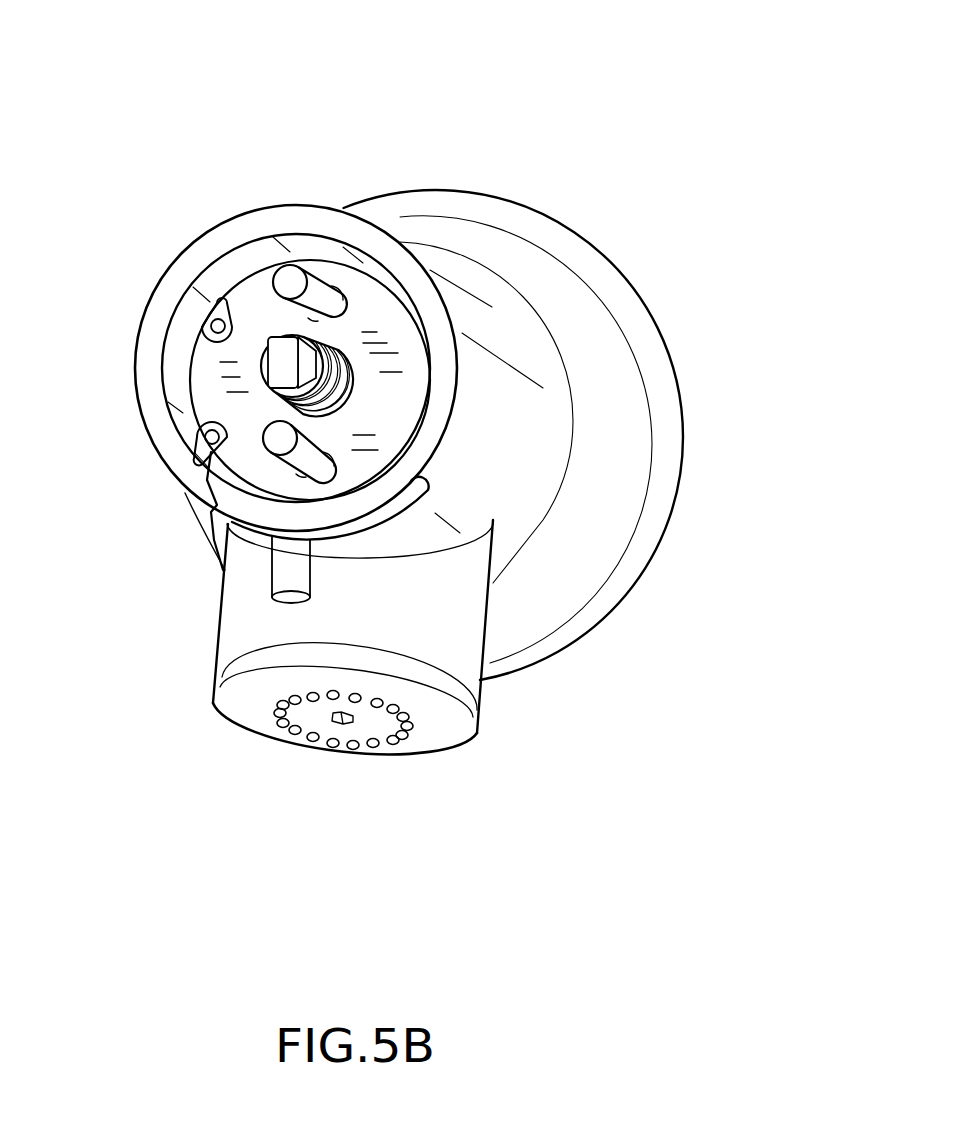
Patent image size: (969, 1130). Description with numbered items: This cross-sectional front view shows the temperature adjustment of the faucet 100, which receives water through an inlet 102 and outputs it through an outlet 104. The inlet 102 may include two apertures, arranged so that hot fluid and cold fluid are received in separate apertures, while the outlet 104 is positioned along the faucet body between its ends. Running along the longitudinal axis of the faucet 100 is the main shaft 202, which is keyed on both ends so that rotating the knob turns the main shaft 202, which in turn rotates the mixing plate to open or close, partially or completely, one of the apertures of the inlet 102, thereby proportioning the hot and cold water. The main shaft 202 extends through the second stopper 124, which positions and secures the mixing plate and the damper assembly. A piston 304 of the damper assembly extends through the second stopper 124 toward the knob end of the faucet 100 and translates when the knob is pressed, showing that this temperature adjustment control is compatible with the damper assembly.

The faucet 100 is at (421, 114).
The inlet 102 is at (579, 215).
The outlet 104 is at (212, 711).
The second stopper 124 is at (203, 380).
The main shaft 202 is at (283, 368).
The piston 304 is at (275, 442).